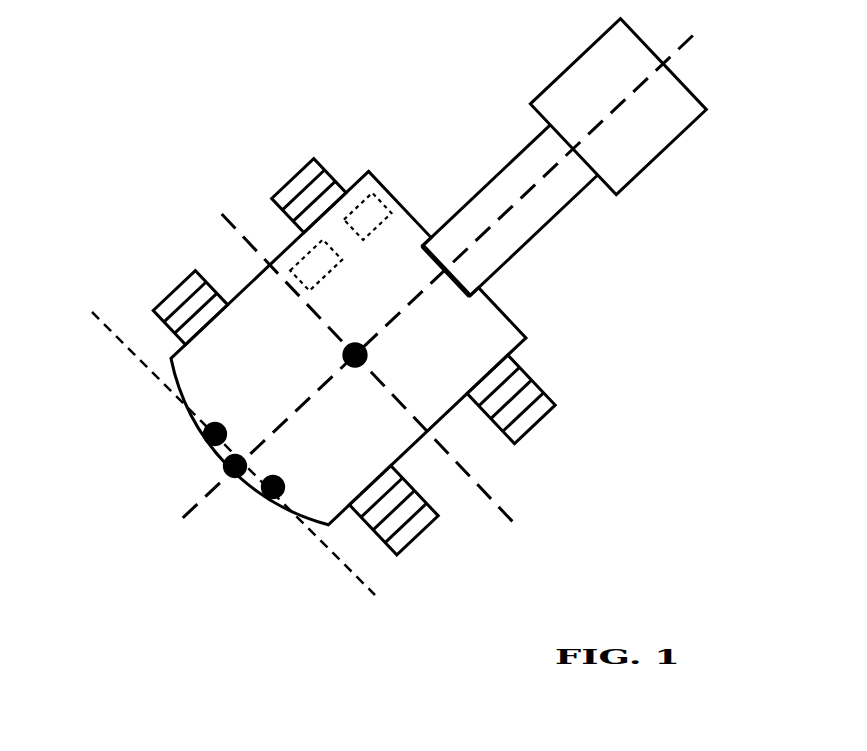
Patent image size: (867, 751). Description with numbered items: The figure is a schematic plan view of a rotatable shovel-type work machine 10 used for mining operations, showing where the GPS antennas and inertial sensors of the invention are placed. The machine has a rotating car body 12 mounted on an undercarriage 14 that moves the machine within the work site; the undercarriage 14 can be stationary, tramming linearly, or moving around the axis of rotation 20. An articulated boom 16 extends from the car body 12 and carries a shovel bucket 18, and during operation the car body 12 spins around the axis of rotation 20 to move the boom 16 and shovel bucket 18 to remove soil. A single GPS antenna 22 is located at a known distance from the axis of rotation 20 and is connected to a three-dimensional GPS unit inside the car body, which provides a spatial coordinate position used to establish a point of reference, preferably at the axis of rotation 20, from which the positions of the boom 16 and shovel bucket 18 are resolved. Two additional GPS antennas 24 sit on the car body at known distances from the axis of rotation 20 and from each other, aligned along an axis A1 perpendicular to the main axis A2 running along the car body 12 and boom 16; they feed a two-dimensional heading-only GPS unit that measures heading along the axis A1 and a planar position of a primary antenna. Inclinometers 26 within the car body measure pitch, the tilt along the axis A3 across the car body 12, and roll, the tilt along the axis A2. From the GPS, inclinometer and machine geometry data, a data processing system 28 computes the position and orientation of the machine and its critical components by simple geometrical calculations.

The rotatable shovel-type work machine 10 is at (442, 319).
The rotating car body 12 is at (377, 359).
The undercarriage 14 is at (537, 395).
The articulated boom 16 is at (514, 210).
The shovel bucket 18 is at (618, 107).
The axis of rotation 20 is at (345, 355).
The single GPS antenna 22 is at (202, 509).
The two additional GPS antennas 24 is at (204, 507).
The inclinometers 26 is at (281, 240).
The data processing system 28 is at (339, 184).
The axis A1 is at (247, 466).
The main axis A2 is at (675, 52).
The axis A3 is at (377, 390).